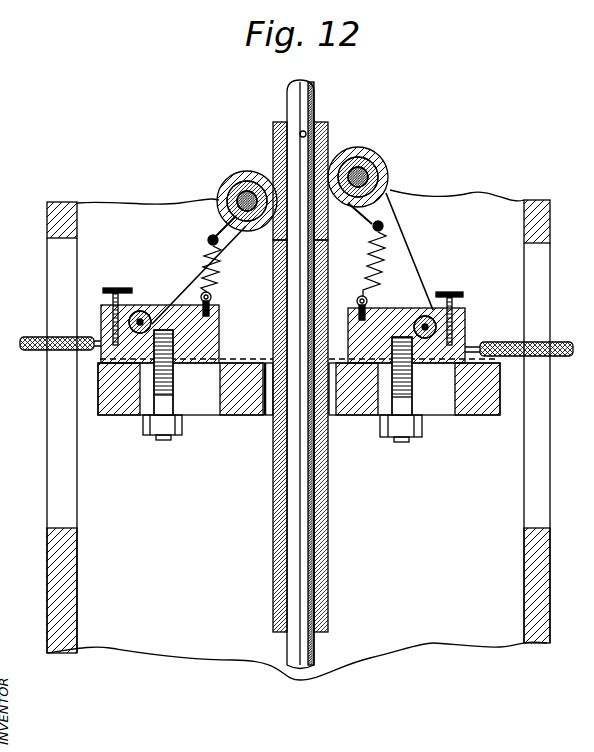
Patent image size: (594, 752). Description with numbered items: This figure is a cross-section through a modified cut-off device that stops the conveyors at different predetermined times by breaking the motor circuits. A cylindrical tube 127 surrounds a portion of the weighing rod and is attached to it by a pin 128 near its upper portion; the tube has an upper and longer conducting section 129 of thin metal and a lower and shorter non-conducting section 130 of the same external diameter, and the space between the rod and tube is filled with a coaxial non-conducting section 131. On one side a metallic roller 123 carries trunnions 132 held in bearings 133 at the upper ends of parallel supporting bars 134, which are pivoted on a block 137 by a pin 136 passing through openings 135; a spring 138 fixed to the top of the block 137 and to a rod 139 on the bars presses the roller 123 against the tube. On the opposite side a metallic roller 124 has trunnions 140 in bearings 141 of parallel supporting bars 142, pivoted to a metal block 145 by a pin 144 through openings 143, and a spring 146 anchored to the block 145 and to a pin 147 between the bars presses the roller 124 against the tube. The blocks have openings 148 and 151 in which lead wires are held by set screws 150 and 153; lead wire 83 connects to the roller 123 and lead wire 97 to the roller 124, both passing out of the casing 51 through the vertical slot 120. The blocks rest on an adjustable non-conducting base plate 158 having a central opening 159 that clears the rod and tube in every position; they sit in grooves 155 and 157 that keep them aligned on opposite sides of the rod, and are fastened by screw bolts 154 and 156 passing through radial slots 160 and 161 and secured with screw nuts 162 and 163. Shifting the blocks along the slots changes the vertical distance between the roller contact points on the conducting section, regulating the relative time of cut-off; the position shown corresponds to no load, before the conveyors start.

The casing 51 is at (47, 526).
The lead wire 83 is at (36, 337).
The lead wire 97 is at (562, 342).
The vertical slot 120 is at (58, 412).
The metallic roller 123 is at (244, 172).
The metallic roller 124 is at (390, 163).
The cylindrical tube 127 is at (330, 148).
The pin 128 is at (330, 128).
The upper section of tube 129 is at (273, 306).
The lower section of tube 130 is at (273, 580).
The non-conducting tube 131 is at (318, 470).
The trunnions 132 is at (241, 196).
The bearings 133 is at (222, 219).
The supporting bars 134 is at (173, 260).
The openings 135 is at (143, 312).
The pin 136 is at (150, 311).
The block 137 is at (208, 344).
The spring 138 is at (218, 275).
The rod 139 is at (220, 243).
The trunnions 140 is at (385, 172).
The bearings 141 is at (368, 179).
The supporting bars 142 is at (405, 248).
The openings 143 is at (433, 316).
The pin 144 is at (423, 316).
The metal block 145 is at (463, 327).
The spring 146 is at (361, 286).
The pin 147 is at (372, 232).
The opening 148 is at (112, 300).
The set screw 150 is at (116, 288).
The opening 151 is at (465, 343).
The set screw 153 is at (463, 302).
The screw bolt 154 is at (168, 441).
The groove 155 is at (96, 358).
The screw bolt 156 is at (402, 442).
The groove 157 is at (505, 358).
The base plate 158 is at (240, 410).
The central opening 159 is at (335, 402).
The slot 160 is at (195, 408).
The slot 161 is at (445, 405).
The screw nut 162 is at (143, 427).
The screw nut 163 is at (412, 436).